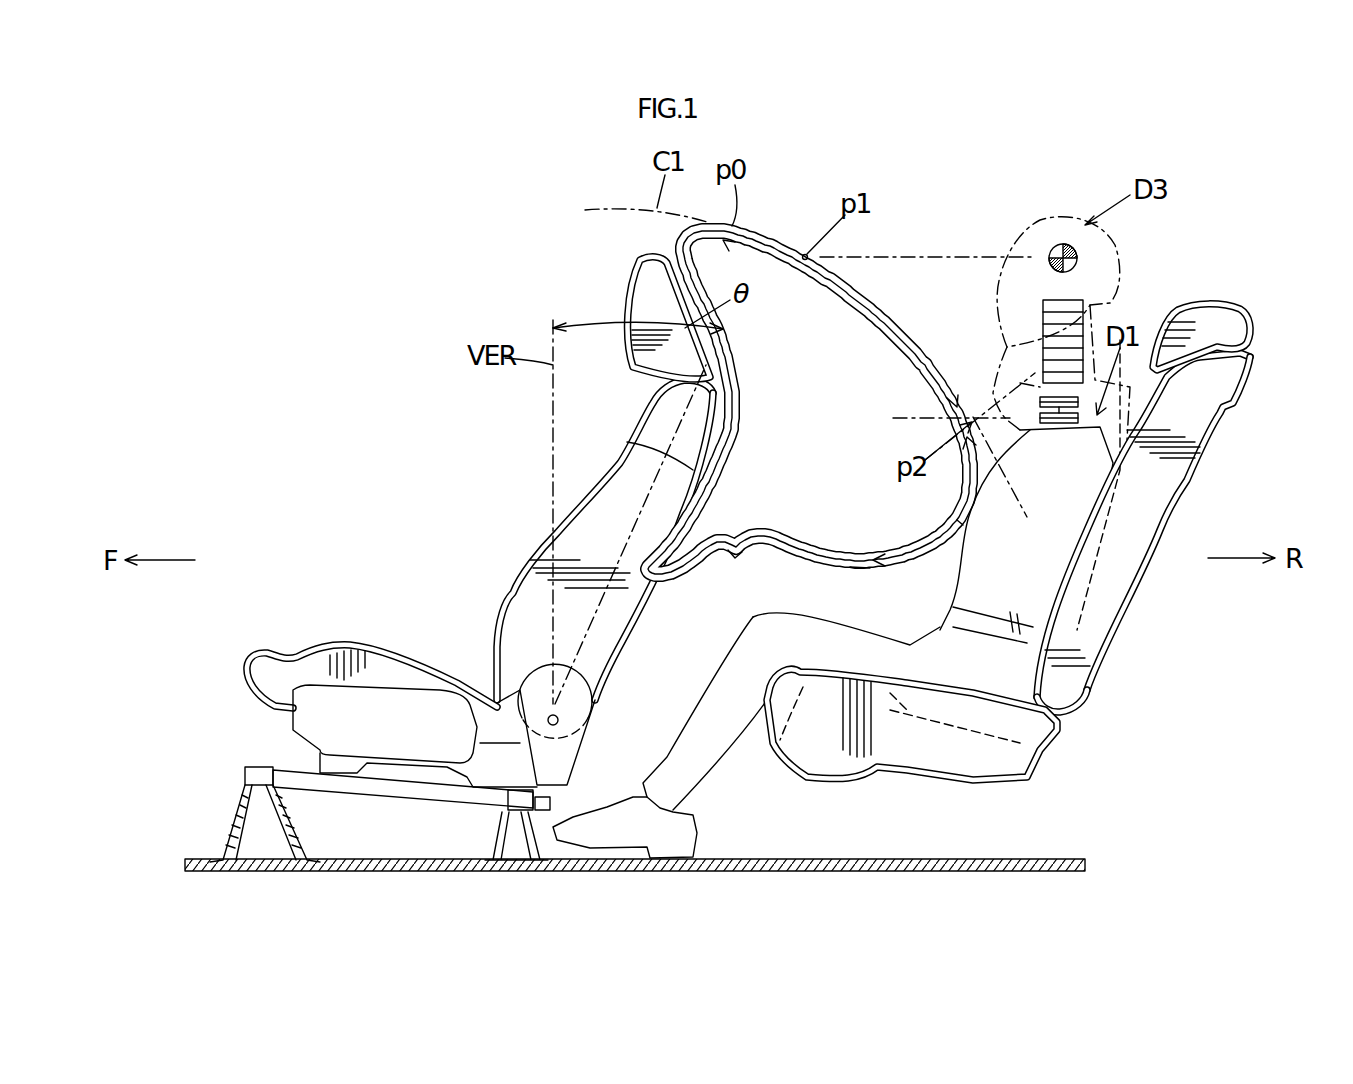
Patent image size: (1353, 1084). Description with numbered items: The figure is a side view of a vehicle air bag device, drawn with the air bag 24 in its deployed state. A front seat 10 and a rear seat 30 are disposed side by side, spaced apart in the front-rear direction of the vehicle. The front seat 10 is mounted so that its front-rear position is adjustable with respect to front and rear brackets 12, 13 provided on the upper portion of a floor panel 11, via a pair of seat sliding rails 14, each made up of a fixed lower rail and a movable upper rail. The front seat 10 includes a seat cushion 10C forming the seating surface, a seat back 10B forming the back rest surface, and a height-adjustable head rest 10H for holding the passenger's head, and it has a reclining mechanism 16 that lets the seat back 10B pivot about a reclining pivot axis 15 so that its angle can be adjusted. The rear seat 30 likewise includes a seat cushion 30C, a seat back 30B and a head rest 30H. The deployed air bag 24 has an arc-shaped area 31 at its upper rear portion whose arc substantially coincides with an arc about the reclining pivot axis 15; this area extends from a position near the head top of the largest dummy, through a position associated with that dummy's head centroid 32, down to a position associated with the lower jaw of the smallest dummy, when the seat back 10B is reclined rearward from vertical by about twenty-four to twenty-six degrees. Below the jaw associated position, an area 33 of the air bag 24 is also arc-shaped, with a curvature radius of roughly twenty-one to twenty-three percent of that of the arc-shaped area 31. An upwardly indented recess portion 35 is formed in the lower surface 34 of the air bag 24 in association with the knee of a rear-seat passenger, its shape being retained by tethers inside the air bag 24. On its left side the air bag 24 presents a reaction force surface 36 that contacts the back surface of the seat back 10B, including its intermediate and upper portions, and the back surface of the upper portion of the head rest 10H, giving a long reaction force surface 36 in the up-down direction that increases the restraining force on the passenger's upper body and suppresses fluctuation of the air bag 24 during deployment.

The front seat 10 is at (447, 559).
The seat back 10B is at (530, 553).
The seat cushion 10C is at (330, 650).
The head rest 10H is at (628, 290).
The floor panel 11 is at (415, 871).
The front bracket 12 is at (232, 818).
The rear bracket 13 is at (495, 828).
The seat sliding rail 14 is at (375, 800).
The reclining pivot axis 15 is at (575, 705).
The reclining mechanism 16 is at (582, 668).
The air bag 24 is at (801, 392).
The rear seat 30 is at (1024, 537).
The seat back 30B is at (1118, 612).
The seat cushion 30C is at (912, 770).
The head rest 30H is at (1212, 312).
The arc-shaped area 31 is at (880, 318).
The head centroid 32 is at (1068, 245).
The area 33 is at (965, 523).
The lower surface 34 is at (807, 563).
The recess portion 35 is at (750, 540).
The reaction force surface 36 is at (627, 442).